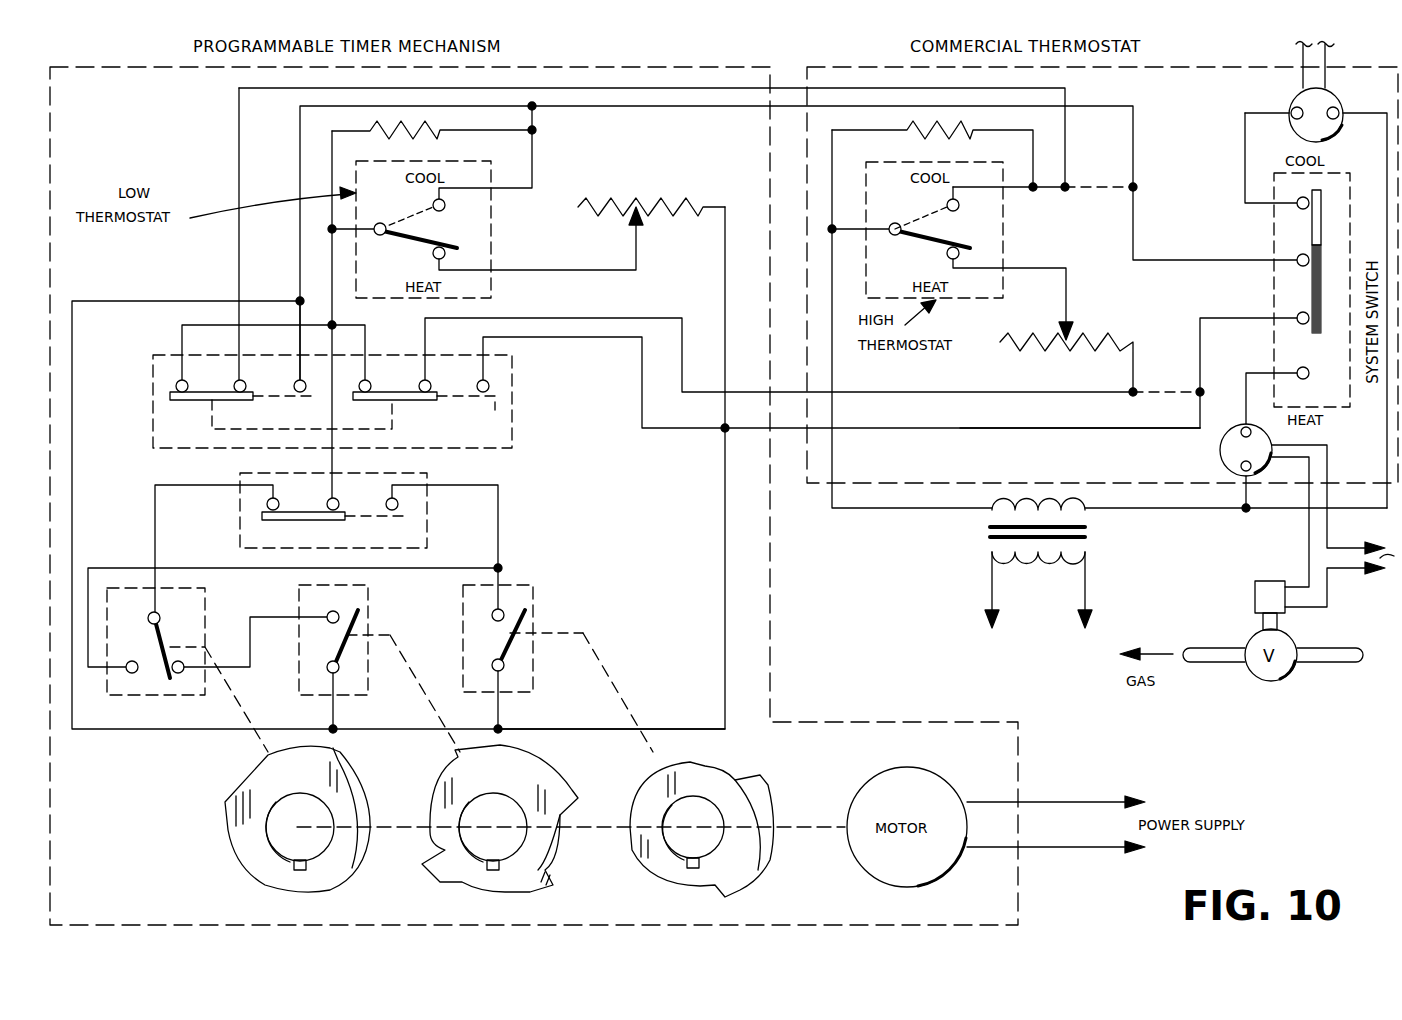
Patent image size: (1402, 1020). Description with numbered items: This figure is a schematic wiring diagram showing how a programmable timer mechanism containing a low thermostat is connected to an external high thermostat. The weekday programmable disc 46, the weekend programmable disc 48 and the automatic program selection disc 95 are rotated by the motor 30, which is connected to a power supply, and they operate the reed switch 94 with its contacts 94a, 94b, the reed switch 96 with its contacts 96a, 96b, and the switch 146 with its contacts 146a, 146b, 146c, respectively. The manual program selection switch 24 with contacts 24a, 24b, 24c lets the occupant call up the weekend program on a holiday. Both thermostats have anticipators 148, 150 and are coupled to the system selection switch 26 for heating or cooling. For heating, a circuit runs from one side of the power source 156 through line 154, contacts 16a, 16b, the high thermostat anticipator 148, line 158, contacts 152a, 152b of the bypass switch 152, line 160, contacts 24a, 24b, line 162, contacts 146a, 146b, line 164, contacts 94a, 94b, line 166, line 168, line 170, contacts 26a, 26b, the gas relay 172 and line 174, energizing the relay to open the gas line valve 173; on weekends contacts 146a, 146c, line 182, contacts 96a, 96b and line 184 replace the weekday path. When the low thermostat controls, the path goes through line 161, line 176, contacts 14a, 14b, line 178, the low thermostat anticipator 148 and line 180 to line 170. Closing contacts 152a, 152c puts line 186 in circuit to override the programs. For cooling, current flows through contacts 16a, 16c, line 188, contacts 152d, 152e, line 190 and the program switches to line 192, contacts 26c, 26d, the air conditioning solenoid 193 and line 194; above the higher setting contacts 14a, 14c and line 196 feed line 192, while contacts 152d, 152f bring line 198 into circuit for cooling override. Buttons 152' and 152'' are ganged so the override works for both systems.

The low thermostat contact 14a is at (374, 227).
The low thermostat heating contact 14b is at (432, 254).
The low thermostat cooling contact 14c is at (446, 206).
The high thermostat contact 16a is at (895, 237).
The high thermostat heating contact 16b is at (960, 254).
The high thermostat cooling contact 16c is at (946, 207).
The manual program selection switch 24 is at (240, 541).
The contact of switch 24 24a is at (340, 510).
The contact of switch 24 24b is at (262, 500).
The contact of switch 24 24c is at (400, 503).
The system selection switch 26 is at (1255, 158).
The system selection switch heating contact 26a is at (1297, 316).
The system selection switch heating contact 26b is at (1297, 371).
The system selection switch cooling contact 26c is at (1297, 257).
The system selection switch cooling contact 26d is at (1298, 200).
The motor 30 is at (916, 781).
The weekday programmable disc 46 is at (447, 860).
The weekend programmable disc 48 is at (672, 875).
The reed switch 94 is at (299, 683).
The contact of reed switch 94 94a is at (341, 615).
The contact of reed switch 94 94b is at (340, 673).
The automatic program selection disc 95 is at (260, 864).
The reed switch 96 is at (533, 600).
The contact of reed switch 96 96a is at (492, 617).
The contact of reed switch 96 96b is at (505, 666).
The switch 146 is at (145, 698).
The contact of switch 146 146a is at (162, 617).
The weekday contact of switch 146 146b is at (181, 674).
The weekend contact of switch 146 146c is at (140, 652).
The high thermostat anticipator 148 is at (650, 203).
The anticipator 150 is at (436, 132).
The bypass switch 152 is at (302, 401).
The button 152' is at (424, 414).
The button 152'' is at (244, 420).
The contact of bypass switch 152a is at (429, 380).
The contact of bypass switch 152b is at (368, 380).
The contact of bypass switch 152c is at (489, 383).
The contact of bypass switch 152d is at (234, 384).
The contact of bypass switch 152e is at (177, 382).
The contact of bypass switch 152f is at (294, 385).
The line 154 is at (899, 510).
The power source 156 is at (990, 535).
The line 158 is at (975, 391).
The line 160 is at (336, 325).
The line 161 is at (332, 282).
The line 162 is at (155, 516).
The line 164 is at (271, 617).
The line 166 is at (333, 713).
The line 168 is at (725, 608).
The line 170 is at (960, 432).
The gas relay 172 is at (1230, 452).
The gas line valve 173 is at (1269, 682).
The line 174 is at (1132, 510).
The line 176 is at (332, 230).
The line 178 is at (528, 270).
The line 180 is at (725, 261).
The line 182 is at (124, 568).
The line 184 is at (498, 716).
The line 186 is at (667, 430).
The line 188 is at (1045, 190).
The line 190 is at (193, 325).
The line 192 is at (300, 130).
The air conditioning solenoid 193 is at (1292, 100).
The line 194 is at (1360, 113).
The line 196 is at (532, 176).
The line 198 is at (300, 340).